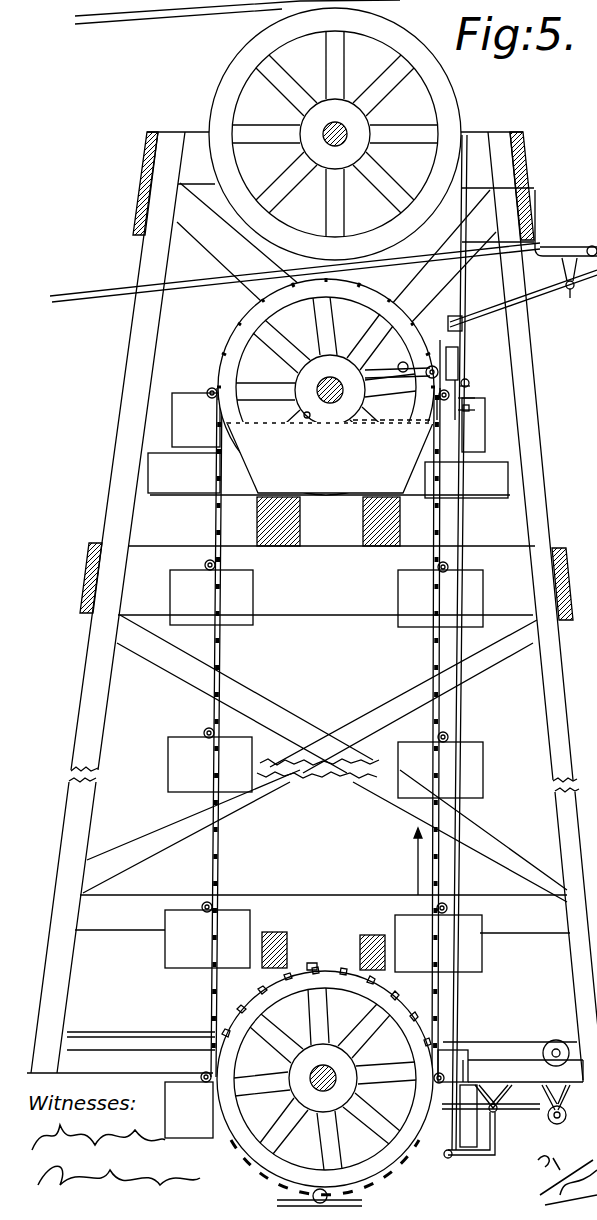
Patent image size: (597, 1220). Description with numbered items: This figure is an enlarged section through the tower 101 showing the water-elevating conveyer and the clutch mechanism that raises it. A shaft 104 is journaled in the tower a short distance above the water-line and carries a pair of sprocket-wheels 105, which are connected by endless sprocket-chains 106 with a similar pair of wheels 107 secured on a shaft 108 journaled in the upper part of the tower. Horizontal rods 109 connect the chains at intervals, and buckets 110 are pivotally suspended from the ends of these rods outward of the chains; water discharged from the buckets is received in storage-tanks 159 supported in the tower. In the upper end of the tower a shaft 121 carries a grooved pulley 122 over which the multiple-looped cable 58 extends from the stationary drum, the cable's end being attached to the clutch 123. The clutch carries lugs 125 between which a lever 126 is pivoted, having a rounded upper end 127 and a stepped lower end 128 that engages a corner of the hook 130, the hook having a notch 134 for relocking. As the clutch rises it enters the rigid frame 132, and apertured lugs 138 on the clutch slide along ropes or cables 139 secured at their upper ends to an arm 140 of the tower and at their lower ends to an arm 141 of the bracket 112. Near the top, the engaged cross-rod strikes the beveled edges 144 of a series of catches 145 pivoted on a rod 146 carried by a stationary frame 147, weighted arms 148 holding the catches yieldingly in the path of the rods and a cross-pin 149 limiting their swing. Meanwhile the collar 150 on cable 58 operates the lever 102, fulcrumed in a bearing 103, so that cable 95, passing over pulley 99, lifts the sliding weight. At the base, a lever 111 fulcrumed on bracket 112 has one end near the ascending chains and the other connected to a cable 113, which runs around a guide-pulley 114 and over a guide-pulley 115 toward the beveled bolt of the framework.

The multiple-looped cable 58 is at (128, 24).
The grooved pulley 122 is at (316, 134).
The shaft 121 is at (300, 116).
The tower 101 is at (312, 603).
The cable 95 is at (295, 272).
The sprocket-wheels 107 is at (311, 386).
The shaft 108 is at (330, 390).
The weighted arms 148 is at (440, 340).
The clutch 123 is at (447, 346).
The collar 150 is at (465, 320).
The rigid frame 132 is at (474, 324).
The arm 140 is at (495, 237).
The pulley 99 is at (568, 240).
The bearing 103 is at (565, 280).
The lever 102 is at (566, 300).
The rounded upper end 127 is at (468, 367).
The lugs 125 is at (466, 383).
The lever 126 is at (466, 390).
The stepped lower end 128 is at (466, 397).
The notch 134 is at (467, 400).
The hook 130 is at (468, 402).
The apertured lugs 138 is at (468, 404).
The rod 146 is at (425, 377).
The cross-pin 149 is at (311, 416).
The stationary frame 147 is at (322, 432).
The catches 145 is at (430, 388).
The horizontal rods 109 is at (205, 730).
The beveled edges 144 is at (434, 405).
The storage-tanks 159 is at (184, 473).
The endless sprocket-chains 106 is at (223, 643).
The buckets 110 is at (175, 760).
The ropes or cables 139 is at (460, 705).
The sprocket-wheels 105 is at (315, 968).
The shaft 104 is at (325, 1086).
The cable 113 is at (524, 1041).
The guide-pulley 115 is at (556, 1042).
The lever 111 is at (518, 1112).
The bracket 112 is at (484, 1122).
The guide-pulley 114 is at (566, 1121).
The arm 141 is at (479, 1162).